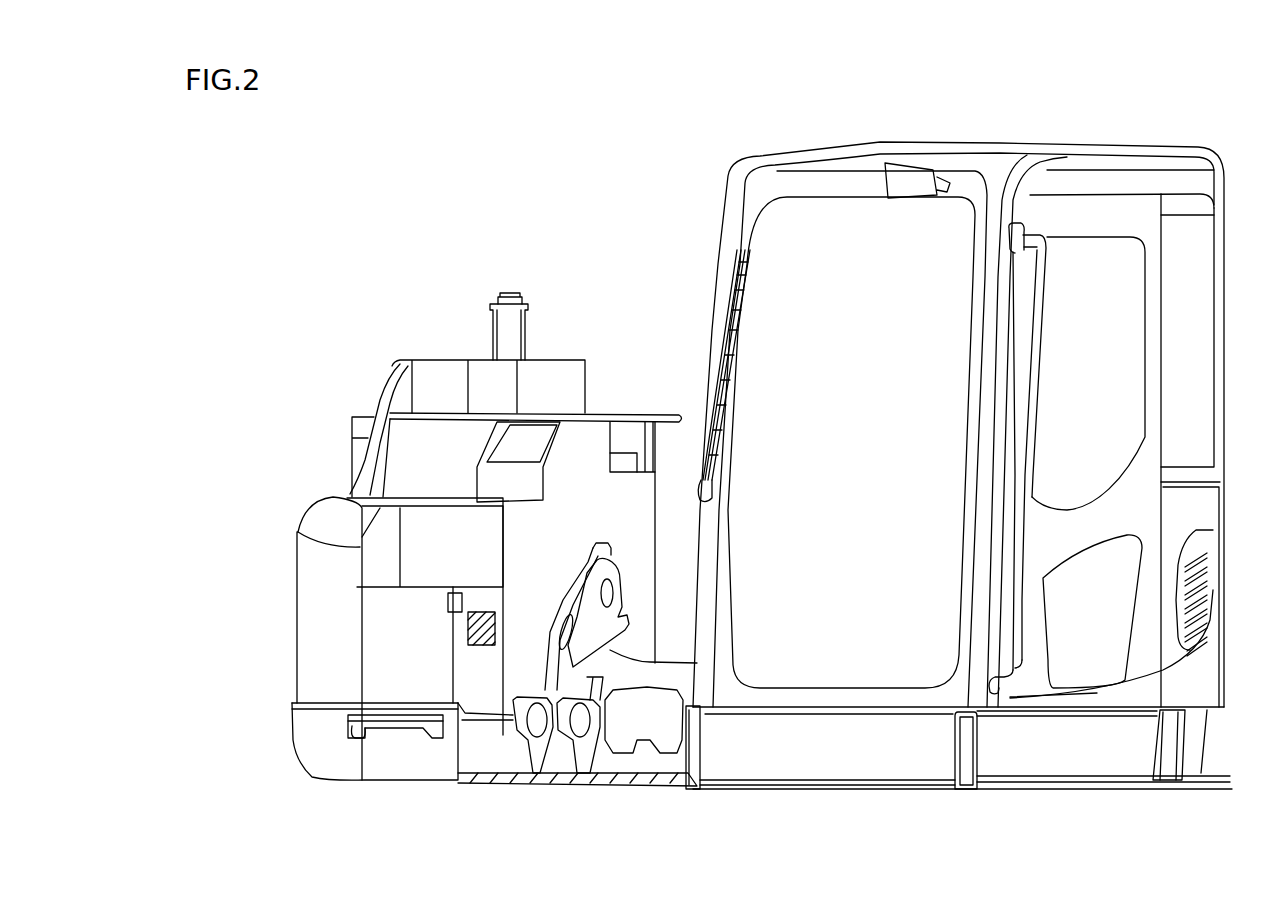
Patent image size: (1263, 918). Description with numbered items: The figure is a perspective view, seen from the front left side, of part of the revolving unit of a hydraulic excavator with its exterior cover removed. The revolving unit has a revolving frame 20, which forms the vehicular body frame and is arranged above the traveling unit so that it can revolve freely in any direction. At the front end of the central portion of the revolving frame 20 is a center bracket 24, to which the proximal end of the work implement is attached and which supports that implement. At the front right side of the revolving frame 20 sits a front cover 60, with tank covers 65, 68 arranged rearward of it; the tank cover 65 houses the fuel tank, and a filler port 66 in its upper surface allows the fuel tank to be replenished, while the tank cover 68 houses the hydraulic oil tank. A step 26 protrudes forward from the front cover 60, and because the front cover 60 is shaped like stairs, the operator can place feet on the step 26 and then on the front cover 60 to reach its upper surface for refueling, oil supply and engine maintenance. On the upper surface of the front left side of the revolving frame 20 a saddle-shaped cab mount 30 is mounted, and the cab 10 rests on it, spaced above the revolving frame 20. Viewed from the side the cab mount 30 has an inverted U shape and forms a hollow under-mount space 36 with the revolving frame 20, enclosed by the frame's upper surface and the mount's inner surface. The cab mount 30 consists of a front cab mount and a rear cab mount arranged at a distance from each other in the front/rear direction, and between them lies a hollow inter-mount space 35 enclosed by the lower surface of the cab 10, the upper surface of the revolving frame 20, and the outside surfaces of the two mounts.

The cab 10 is at (1208, 133).
The revolving frame 20 is at (790, 783).
The center bracket 24 is at (640, 755).
The step 26 is at (392, 725).
The cab mount 30 is at (923, 752).
The inter-mount space 35 is at (1028, 760).
The under-mount space 36 is at (968, 748).
The front cover 60 is at (350, 394).
The tank cover 65 is at (547, 381).
The filler port 66 is at (505, 336).
The tank cover 68 is at (645, 489).